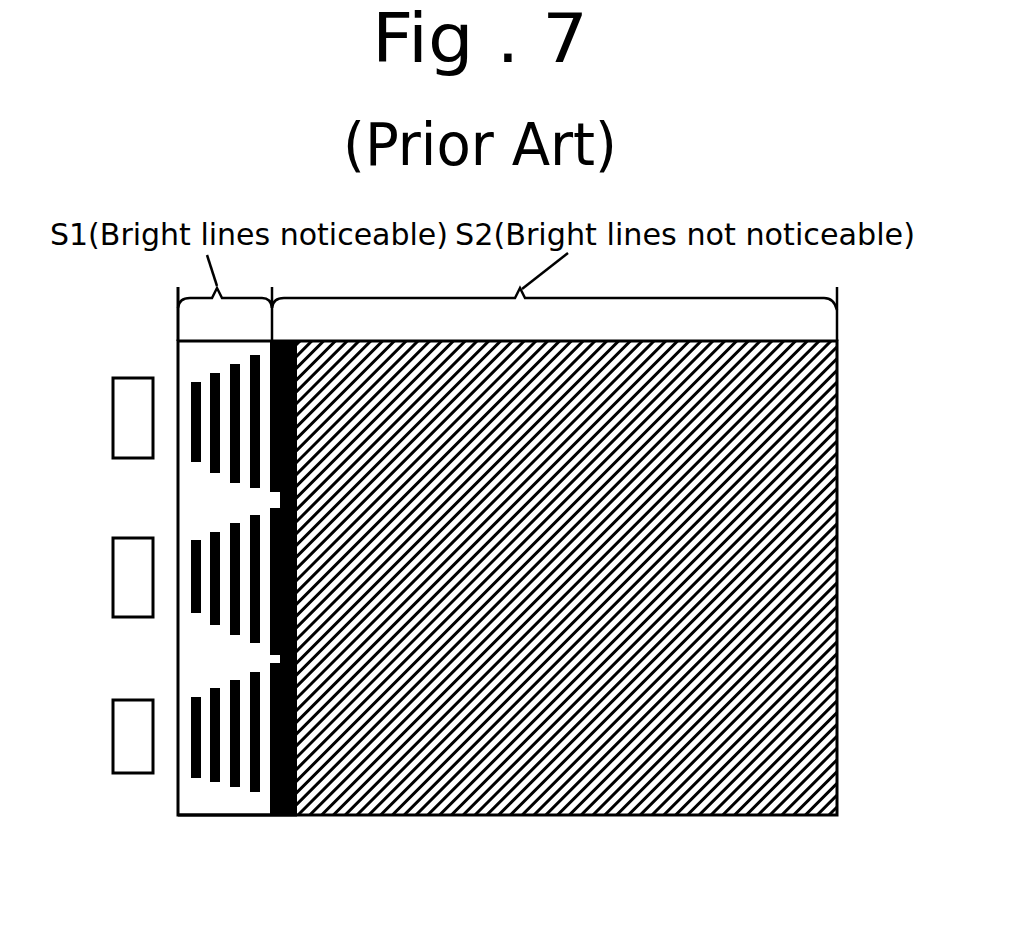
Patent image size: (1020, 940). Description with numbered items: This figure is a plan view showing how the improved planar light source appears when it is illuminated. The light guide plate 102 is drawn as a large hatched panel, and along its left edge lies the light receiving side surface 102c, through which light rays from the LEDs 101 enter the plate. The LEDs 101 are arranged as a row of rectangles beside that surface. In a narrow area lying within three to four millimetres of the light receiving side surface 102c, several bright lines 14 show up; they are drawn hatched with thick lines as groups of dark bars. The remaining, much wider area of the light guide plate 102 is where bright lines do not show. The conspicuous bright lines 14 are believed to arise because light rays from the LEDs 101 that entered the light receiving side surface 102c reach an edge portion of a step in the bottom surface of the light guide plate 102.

The bright lines 14 is at (266, 508).
The LEDs 101 is at (135, 378).
The light guide plate 102 is at (678, 818).
The light receiving side surface 102c is at (177, 795).